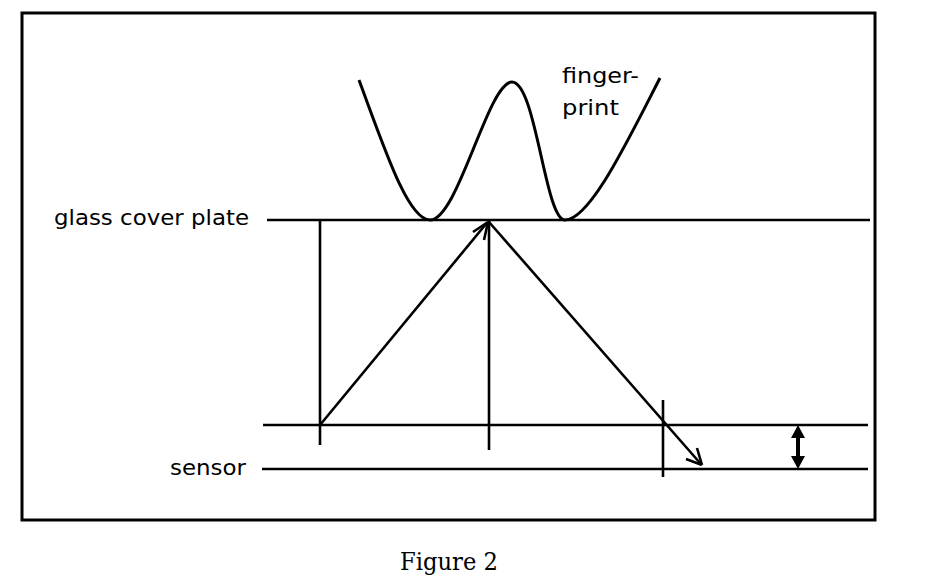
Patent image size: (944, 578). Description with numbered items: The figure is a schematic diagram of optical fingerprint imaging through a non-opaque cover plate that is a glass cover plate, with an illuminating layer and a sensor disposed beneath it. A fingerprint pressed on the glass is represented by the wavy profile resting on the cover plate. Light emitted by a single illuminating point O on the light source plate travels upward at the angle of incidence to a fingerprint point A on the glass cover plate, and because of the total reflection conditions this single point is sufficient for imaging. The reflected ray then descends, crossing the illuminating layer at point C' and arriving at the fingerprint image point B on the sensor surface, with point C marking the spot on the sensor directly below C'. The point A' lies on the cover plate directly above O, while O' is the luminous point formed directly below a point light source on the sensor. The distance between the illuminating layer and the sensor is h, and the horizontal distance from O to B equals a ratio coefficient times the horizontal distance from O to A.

The fingerprint point A is at (487, 315).
The point on glass cover plate A' is at (326, 311).
The illuminating point O is at (389, 324).
The luminous point O' is at (457, 463).
The fingerprint image point B is at (603, 361).
The point on sensor C is at (663, 450).
The point on illuminating layer C' is at (664, 405).
The distance between illuminating layer and sensor h is at (788, 447).